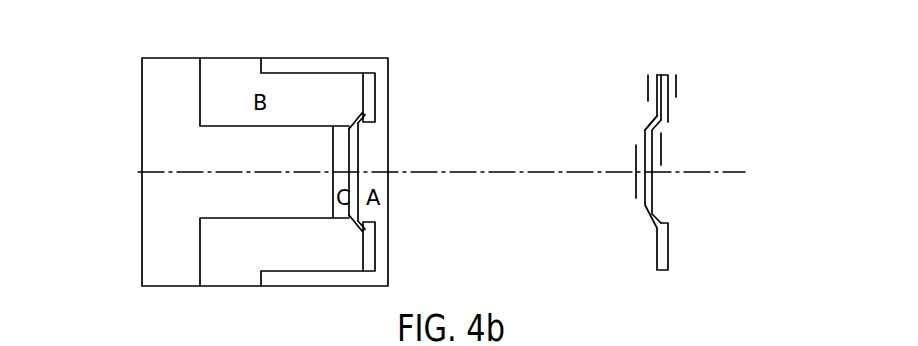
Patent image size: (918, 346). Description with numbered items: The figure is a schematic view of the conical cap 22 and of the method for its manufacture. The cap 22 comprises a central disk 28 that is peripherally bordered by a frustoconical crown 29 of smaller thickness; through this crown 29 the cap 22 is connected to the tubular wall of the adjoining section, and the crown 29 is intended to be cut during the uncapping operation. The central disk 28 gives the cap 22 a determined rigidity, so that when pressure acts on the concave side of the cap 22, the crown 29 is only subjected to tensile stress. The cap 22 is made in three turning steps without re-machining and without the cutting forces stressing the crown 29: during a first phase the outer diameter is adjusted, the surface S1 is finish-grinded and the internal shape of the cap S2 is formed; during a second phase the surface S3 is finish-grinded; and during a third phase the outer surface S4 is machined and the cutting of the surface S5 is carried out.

The conical cap 22 is at (372, 90).
The central disk 28 is at (357, 169).
The frustoconical crown 29 is at (360, 124).
The surface S1 is at (678, 97).
The internal shape of the cap S2 is at (668, 126).
The surface S3 is at (648, 87).
The outer surface S4 is at (643, 117).
The surface S5 is at (635, 162).